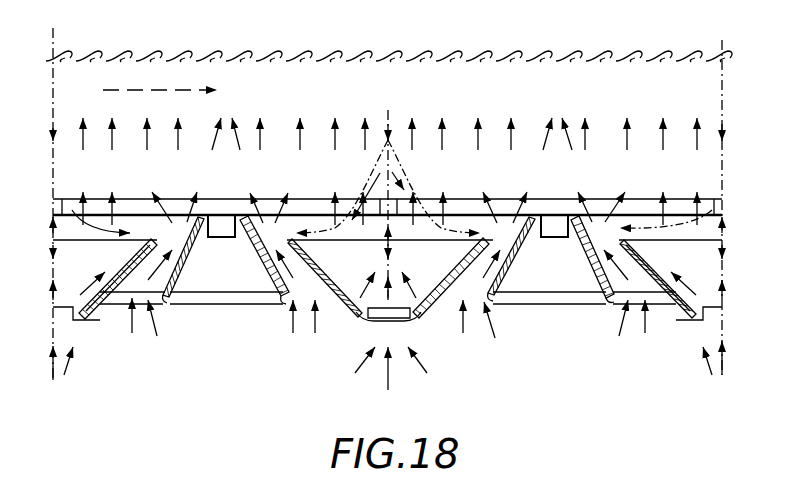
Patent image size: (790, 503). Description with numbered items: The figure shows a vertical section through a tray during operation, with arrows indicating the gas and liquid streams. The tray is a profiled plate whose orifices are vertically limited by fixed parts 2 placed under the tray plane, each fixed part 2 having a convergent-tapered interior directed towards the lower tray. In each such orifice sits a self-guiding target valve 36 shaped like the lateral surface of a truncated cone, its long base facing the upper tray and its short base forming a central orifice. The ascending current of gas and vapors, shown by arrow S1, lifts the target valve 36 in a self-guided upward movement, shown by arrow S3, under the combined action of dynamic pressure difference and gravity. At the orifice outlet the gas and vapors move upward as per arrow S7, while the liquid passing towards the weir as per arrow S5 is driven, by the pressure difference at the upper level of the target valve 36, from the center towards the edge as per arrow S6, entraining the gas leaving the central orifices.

The liquid stream towards the weir S5 is at (150, 92).
The upward gas stream at orifice outlet S7 is at (292, 201).
The upward valve movement S3 is at (388, 224).
The center-to-edge liquid movement S6 is at (452, 232).
The fixed part 2 is at (171, 283).
The target valve 36 is at (360, 316).
The ascending gas and vapor current S1 is at (491, 320).